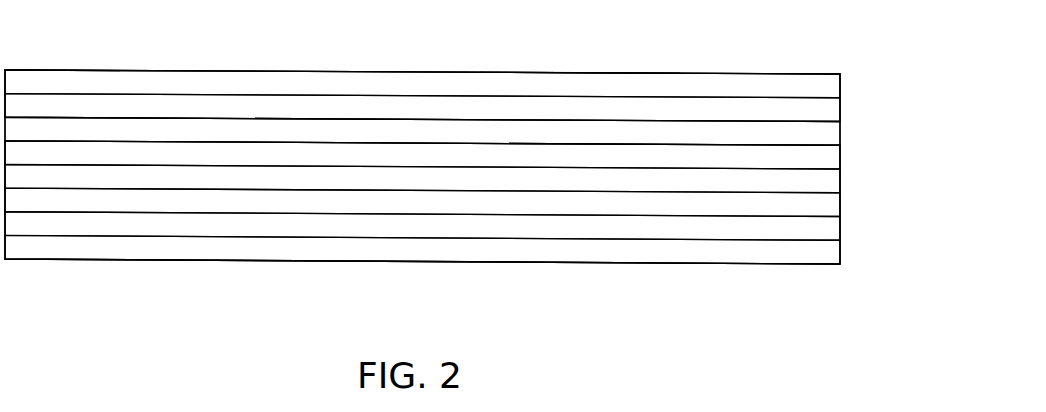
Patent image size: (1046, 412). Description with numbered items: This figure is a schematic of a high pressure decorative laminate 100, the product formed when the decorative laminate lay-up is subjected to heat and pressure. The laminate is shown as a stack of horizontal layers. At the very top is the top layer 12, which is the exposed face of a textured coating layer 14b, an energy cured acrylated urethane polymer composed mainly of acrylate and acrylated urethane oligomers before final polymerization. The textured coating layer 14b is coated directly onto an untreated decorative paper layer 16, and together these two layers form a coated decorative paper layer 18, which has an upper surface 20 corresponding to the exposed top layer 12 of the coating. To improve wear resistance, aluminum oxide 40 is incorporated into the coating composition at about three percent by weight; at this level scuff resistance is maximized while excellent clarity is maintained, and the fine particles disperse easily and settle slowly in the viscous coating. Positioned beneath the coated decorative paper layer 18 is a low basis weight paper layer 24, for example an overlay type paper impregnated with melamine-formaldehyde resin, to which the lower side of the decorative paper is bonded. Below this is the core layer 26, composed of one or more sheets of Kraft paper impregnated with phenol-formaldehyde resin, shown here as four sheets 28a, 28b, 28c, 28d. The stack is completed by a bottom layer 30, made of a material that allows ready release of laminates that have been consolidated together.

The high pressure decorative laminate 100 is at (672, 291).
The top layer 12 is at (530, 73).
The textured coating layer 14b is at (422, 84).
The decorative paper layer 16 is at (422, 108).
The coated decorative paper layer 18 is at (860, 76).
The upper surface 20 is at (623, 73).
The low basis weight paper layer 24 is at (422, 131).
The core layer 26 is at (855, 148).
The sheet of Kraft paper impregnated with phenol-formaldehyde resin 28a is at (422, 155).
The sheet of Kraft paper impregnated with phenol-formaldehyde resin 28b is at (422, 179).
The sheet of Kraft paper impregnated with phenol-formaldehyde resin 28c is at (422, 202).
The sheet of Kraft paper impregnated with phenol-formaldehyde resin 28d is at (422, 226).
The bottom layer 30 is at (422, 249).
The aluminum oxide 40 is at (57, 82).